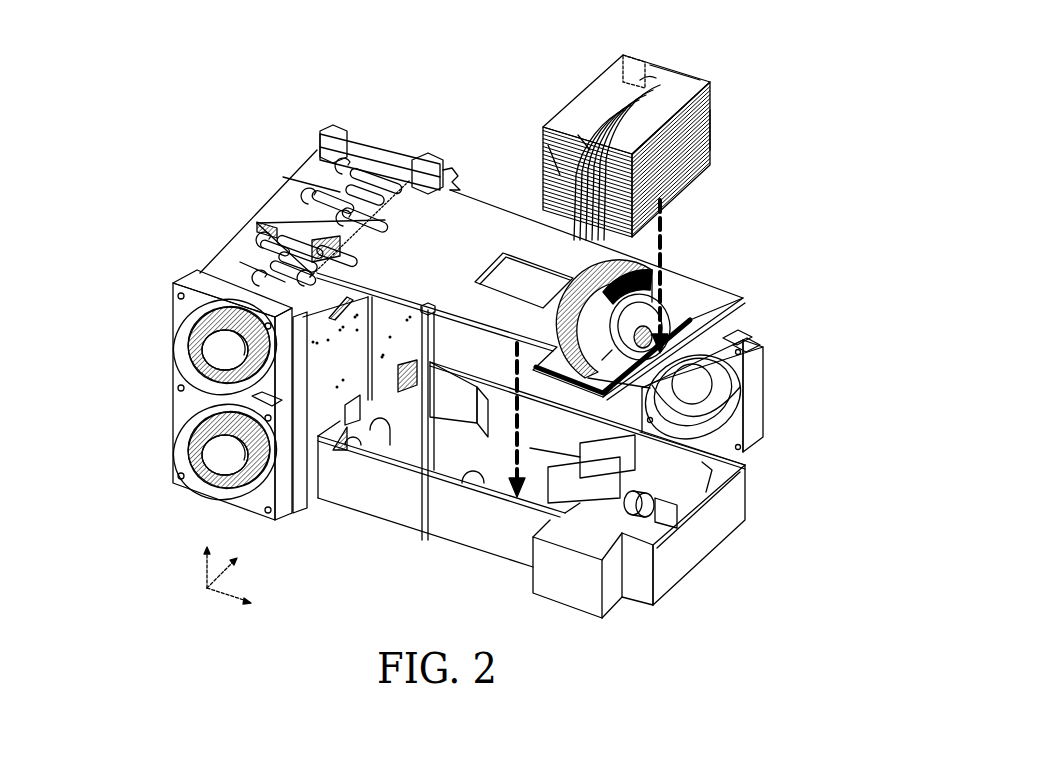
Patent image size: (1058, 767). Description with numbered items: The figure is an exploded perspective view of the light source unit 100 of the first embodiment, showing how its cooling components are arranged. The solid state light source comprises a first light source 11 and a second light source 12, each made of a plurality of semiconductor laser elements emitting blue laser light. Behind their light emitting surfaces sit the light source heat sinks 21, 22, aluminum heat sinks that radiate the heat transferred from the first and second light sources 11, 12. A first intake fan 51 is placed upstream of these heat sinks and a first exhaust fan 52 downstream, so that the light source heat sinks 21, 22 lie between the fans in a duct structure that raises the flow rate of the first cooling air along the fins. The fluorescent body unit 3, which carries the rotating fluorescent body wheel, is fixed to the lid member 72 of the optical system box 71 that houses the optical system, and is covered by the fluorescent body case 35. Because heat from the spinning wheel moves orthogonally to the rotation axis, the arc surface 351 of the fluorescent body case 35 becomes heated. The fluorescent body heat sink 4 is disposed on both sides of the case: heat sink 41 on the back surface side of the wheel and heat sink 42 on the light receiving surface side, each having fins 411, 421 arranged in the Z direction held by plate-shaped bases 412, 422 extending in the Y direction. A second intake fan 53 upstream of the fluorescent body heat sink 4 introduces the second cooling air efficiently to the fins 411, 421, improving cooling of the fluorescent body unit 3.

The light source unit 100 is at (268, 107).
The first light source 11 is at (497, 512).
The second light source 12 is at (429, 483).
The light source heat sink 21 is at (271, 245).
The light source heat sink 22 is at (330, 182).
The fluorescent body unit 3 is at (663, 278).
The fluorescent body case 35 is at (623, 85).
The arc surface 351 is at (648, 75).
The fluorescent body heat sink 4 is at (632, 121).
The fluorescent body heat sink 41 is at (653, 137).
The fins 411 is at (738, 149).
The plate-shaped base 412 is at (680, 72).
The fluorescent body heat sink 42 is at (567, 137).
The fins 421 is at (517, 150).
The plate-shaped base 422 is at (580, 140).
The first intake fan 51 is at (390, 146).
The first exhaust fan 52 is at (204, 395).
The second intake fan 53 is at (716, 366).
The optical system box 71 is at (639, 525).
The lid member 72 is at (734, 284).